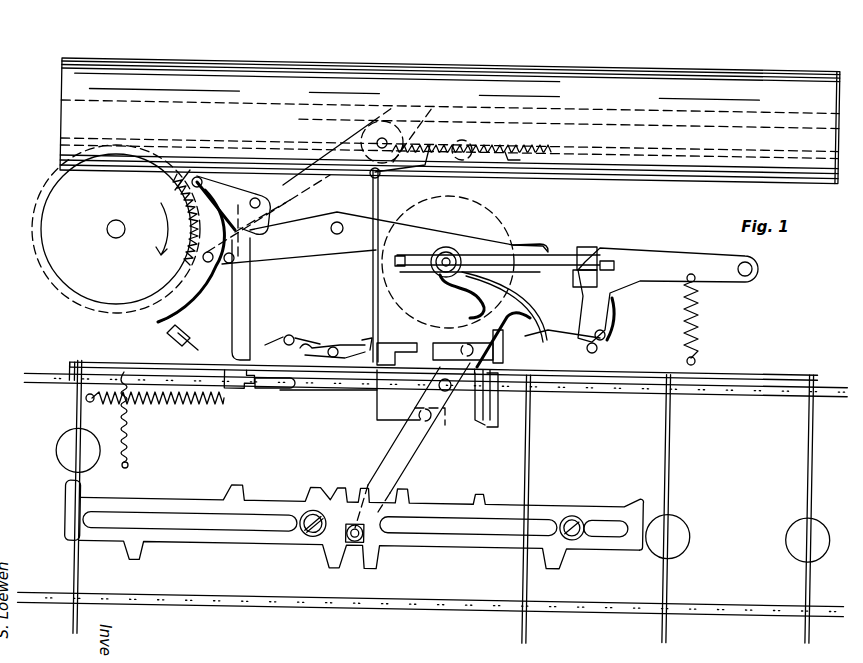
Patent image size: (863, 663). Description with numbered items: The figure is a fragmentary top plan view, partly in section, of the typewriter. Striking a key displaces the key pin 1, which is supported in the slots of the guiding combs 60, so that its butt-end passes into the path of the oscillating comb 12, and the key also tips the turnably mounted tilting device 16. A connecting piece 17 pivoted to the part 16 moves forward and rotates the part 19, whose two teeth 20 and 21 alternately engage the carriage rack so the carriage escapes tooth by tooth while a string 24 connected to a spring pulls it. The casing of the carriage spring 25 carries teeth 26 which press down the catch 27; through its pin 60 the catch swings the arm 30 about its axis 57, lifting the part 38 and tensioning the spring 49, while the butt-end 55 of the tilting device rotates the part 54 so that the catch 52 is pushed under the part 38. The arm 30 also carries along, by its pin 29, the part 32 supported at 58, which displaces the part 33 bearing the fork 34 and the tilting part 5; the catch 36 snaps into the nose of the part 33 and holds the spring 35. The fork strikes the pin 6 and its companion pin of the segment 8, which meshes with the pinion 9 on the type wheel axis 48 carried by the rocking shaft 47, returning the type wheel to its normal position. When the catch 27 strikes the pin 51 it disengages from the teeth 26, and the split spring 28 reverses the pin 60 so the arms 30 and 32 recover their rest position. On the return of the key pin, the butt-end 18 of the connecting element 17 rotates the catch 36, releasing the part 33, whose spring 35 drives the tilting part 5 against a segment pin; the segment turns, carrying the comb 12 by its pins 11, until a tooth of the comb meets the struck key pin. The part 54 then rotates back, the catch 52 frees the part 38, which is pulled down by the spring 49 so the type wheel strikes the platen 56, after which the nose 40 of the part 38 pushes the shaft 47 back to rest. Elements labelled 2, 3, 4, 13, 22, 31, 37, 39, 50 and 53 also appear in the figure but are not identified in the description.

The key pin 1 is at (672, 478).
The end member 2 is at (838, 130).
The bracket 3 is at (498, 410).
The arm 4 is at (478, 428).
The tilting part 5 is at (448, 418).
The pin of the segment 6 is at (428, 424).
The segment 8 is at (478, 316).
The pinion 9 is at (432, 270).
The pins of the segment 11 is at (356, 545).
The oscillating comb 12 is at (165, 496).
The lug 13 is at (488, 500).
The tilting device 16 is at (178, 366).
The connecting piece 17 is at (372, 284).
The butt-end 18 is at (366, 340).
The escapement part 19 is at (426, 170).
The tooth 20 is at (530, 165).
The tooth 21 is at (433, 107).
The ratchet strip 22 is at (570, 158).
The string 24 is at (318, 180).
The carriage spring casing 25 is at (72, 280).
The teeth of the spring casing 26 is at (188, 262).
The catch 27 is at (200, 288).
The split spring 28 is at (262, 247).
The pin of part 30 29 is at (197, 176).
The arm 30 is at (305, 252).
The link end 31 is at (541, 242).
The arm 32 is at (252, 308).
The fork-carrying part 33 is at (330, 392).
The fork 34 is at (400, 345).
The spring 35 is at (148, 408).
The catch 36 is at (327, 343).
The latch pin 37 is at (292, 336).
The striking part 38 is at (665, 245).
The block 39 is at (572, 240).
The nose 40 is at (593, 246).
The rocking shaft 47 is at (540, 270).
The type wheel axis 48 is at (449, 255).
The spring 49 is at (700, 320).
The roller 50 is at (398, 120).
The pin 51 is at (172, 333).
The catch 52 is at (620, 302).
The pin 53 is at (612, 340).
The catch-operating part 54 is at (562, 347).
The butt-end 55 is at (504, 350).
The platen 56 is at (705, 72).
The axis 57 is at (340, 222).
The support point 58 is at (255, 198).
The guiding combs 60 is at (212, 263).